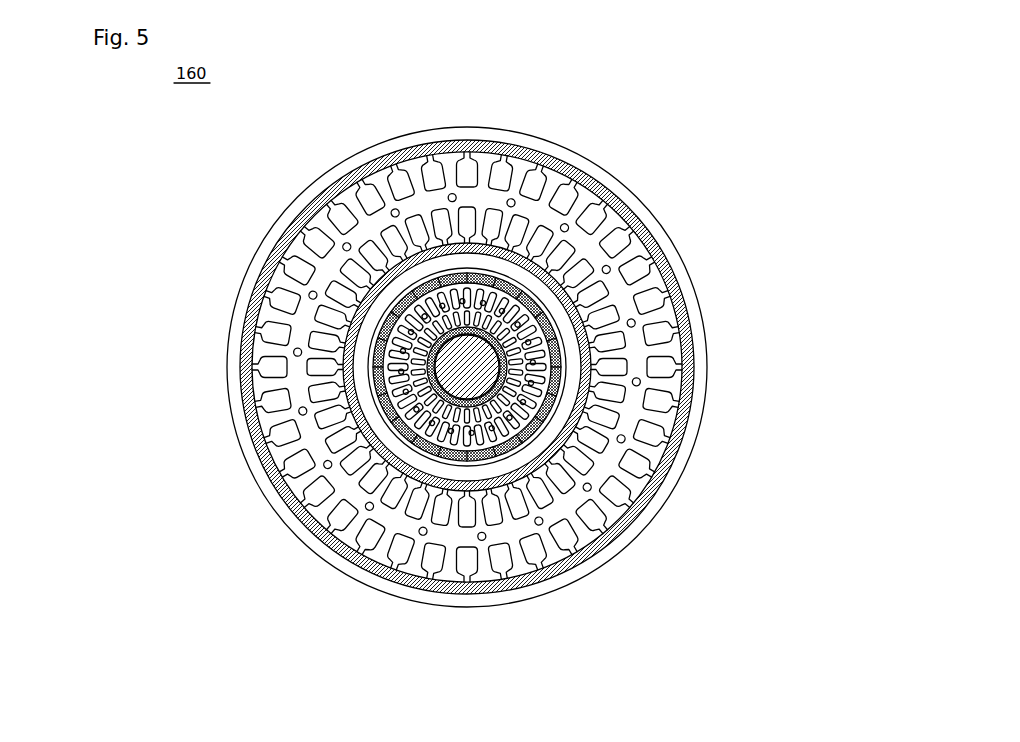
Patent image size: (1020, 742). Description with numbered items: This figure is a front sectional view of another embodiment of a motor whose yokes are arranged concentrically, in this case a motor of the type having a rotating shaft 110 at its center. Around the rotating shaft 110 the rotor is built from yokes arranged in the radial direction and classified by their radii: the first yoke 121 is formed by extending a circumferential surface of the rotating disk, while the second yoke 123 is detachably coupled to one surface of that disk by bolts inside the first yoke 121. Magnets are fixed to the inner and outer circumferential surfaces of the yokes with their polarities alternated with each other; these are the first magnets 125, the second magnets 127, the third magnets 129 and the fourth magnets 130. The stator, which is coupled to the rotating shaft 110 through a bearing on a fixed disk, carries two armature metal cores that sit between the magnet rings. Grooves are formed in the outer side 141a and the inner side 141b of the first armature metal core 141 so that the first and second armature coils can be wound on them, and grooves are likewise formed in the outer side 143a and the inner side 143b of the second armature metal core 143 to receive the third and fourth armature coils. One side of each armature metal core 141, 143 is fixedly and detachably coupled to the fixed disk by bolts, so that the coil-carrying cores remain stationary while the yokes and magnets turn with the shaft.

The rotating shaft 110 is at (462, 388).
The first yoke 121 is at (573, 157).
The second yoke 123 is at (573, 363).
The first magnets 125 is at (687, 413).
The second magnets 127 is at (624, 440).
The third magnets 129 is at (521, 368).
The fourth magnets 130 is at (500, 435).
The first armature metal core 141 is at (521, 368).
The outer side of the first armature metal core 141a is at (658, 316).
The inner side of the first armature metal core 141b is at (562, 262).
The second armature metal core 143 is at (339, 449).
The outer side of the second armature metal core 143a is at (367, 349).
The inner side of the second armature metal core 143b is at (404, 394).